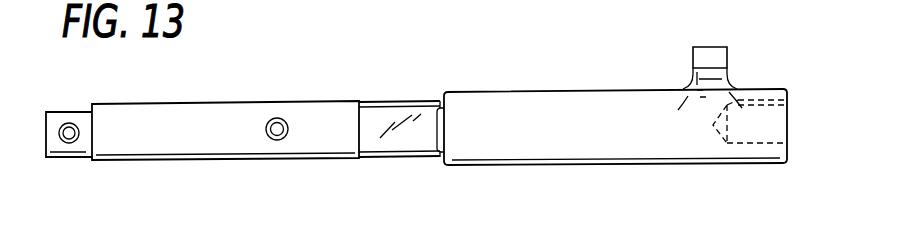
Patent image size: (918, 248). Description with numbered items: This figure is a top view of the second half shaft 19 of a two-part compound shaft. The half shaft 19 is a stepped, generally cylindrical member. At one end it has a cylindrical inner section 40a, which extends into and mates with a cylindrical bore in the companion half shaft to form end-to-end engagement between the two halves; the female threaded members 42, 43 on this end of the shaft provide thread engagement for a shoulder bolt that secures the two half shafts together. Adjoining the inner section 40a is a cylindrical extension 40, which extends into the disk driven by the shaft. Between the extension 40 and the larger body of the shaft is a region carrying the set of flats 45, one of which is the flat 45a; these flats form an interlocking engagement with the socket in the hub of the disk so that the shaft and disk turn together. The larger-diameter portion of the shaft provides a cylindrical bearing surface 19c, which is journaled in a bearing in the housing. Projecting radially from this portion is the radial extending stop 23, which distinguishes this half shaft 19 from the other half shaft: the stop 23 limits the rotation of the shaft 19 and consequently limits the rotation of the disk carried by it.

The second half shaft 19 is at (615, 122).
The cylindrical bearing surface 19c is at (535, 102).
The radial extending stop 23 is at (707, 53).
The cylindrical extension 40 is at (200, 103).
The cylindrical inner section 40a is at (63, 112).
The female threaded member 42 is at (70, 142).
The female threaded member 43 is at (278, 140).
The set of flats 45 is at (397, 99).
The flat 45a is at (403, 147).